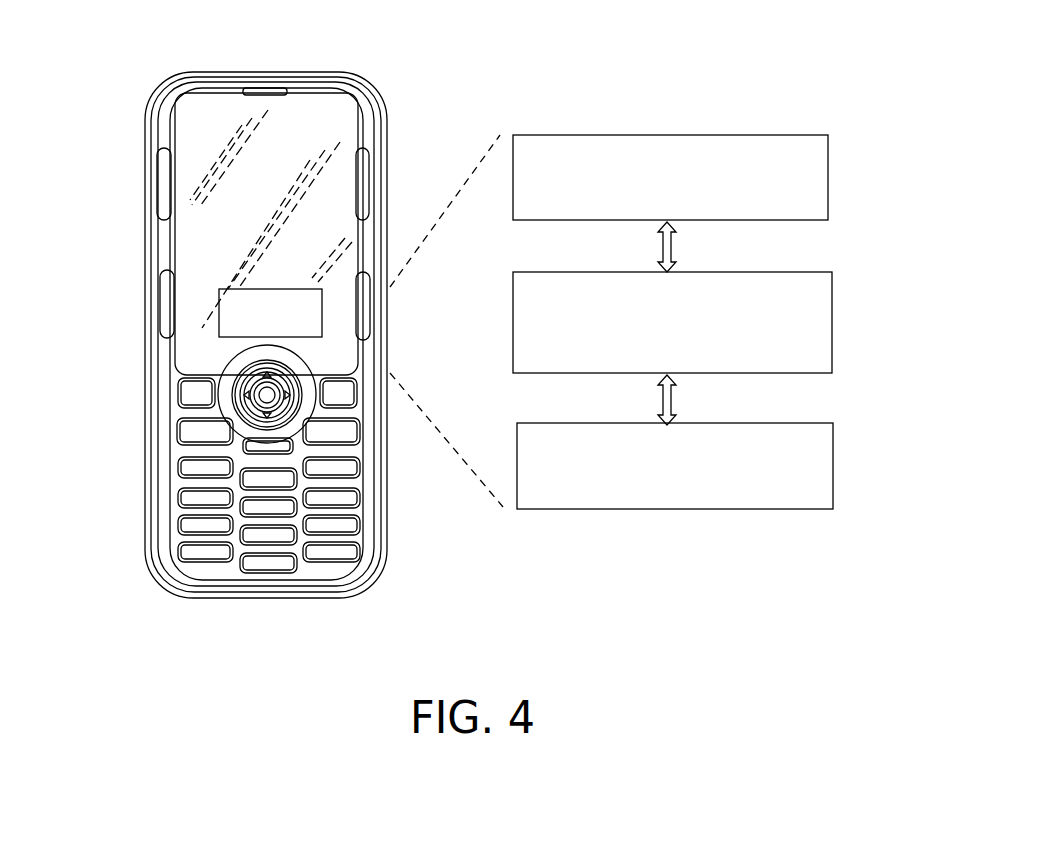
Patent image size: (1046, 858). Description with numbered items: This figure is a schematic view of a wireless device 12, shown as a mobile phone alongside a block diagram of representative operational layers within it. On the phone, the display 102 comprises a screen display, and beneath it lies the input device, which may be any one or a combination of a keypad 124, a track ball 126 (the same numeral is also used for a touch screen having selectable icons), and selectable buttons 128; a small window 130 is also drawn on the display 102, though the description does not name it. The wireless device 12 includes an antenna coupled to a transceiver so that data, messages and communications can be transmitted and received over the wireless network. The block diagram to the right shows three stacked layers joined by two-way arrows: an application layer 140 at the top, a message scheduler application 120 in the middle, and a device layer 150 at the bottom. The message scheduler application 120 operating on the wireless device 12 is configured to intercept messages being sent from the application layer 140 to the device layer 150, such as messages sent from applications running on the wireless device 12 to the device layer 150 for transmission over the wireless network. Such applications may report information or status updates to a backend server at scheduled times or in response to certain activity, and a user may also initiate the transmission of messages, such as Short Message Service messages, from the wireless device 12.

The wireless device 12 is at (204, 68).
The display 102 is at (235, 185).
The message window 130 is at (219, 305).
The track ball 126 is at (252, 392).
The selectable buttons 128 is at (188, 391).
The keypad 124 is at (205, 465).
The application layer 140 is at (828, 172).
The message scheduler application 120 is at (832, 322).
The device layer 150 is at (833, 477).